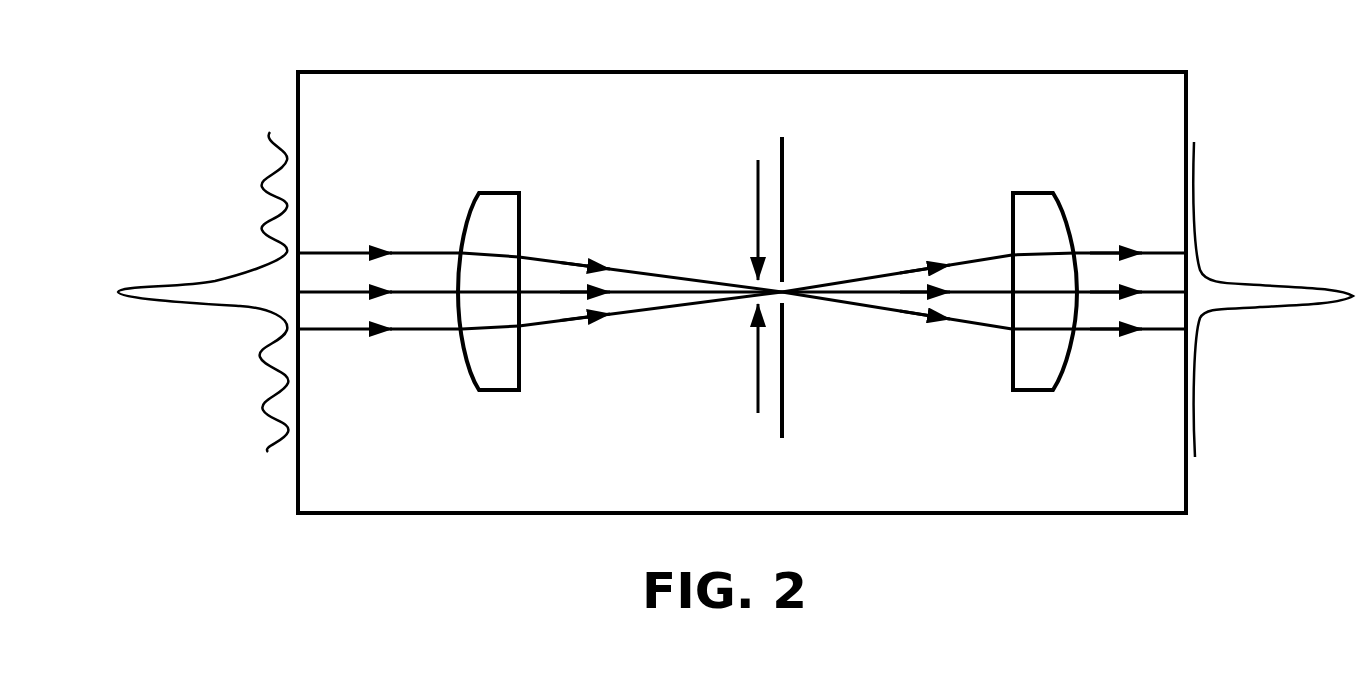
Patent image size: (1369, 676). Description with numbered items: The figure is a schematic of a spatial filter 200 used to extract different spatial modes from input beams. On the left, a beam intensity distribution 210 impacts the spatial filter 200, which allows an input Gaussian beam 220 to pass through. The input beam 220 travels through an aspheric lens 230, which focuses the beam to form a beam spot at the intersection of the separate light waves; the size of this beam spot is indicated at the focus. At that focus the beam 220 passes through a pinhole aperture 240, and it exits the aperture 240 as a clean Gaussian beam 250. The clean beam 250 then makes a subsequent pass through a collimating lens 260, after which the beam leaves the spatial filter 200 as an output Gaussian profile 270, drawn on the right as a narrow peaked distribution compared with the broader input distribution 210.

The spatial filter 200 is at (741, 53).
The beam intensity distribution 210 is at (218, 282).
The input Gaussian beam 220 is at (422, 253).
The aspheric lens 230 is at (518, 193).
The pinhole aperture 240 is at (788, 306).
The clean Gaussian beam 250 is at (878, 275).
The collimating lens 260 is at (1026, 193).
The output Gaussian profile 270 is at (1256, 283).